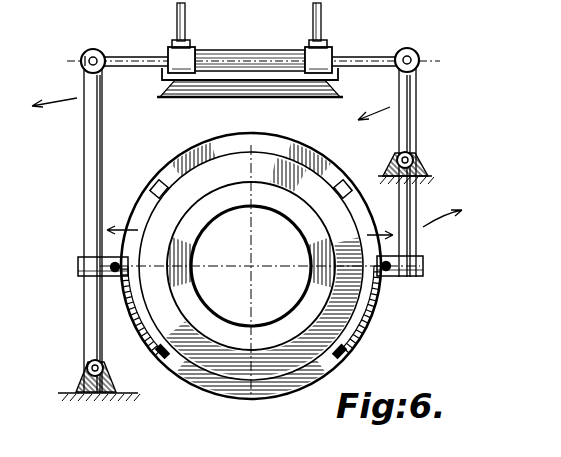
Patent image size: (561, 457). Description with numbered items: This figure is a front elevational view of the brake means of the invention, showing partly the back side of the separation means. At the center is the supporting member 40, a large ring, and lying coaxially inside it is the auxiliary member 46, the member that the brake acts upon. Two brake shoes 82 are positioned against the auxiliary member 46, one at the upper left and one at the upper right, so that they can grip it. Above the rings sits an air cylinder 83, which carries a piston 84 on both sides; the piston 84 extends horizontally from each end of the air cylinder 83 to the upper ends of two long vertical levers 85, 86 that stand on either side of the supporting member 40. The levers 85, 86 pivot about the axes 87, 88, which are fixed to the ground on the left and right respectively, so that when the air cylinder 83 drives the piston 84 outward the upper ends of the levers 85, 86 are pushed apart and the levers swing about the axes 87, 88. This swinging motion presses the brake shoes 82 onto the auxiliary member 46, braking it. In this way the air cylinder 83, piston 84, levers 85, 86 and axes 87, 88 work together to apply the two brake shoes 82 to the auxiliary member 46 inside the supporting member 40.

The supporting member 40 is at (340, 367).
The auxiliary member 46 is at (233, 365).
The brake shoes 82 is at (157, 196).
The air cylinder 83 is at (222, 55).
The piston 84 is at (135, 55).
The lever 85 is at (93, 183).
The lever 86 is at (418, 237).
The axis 87 is at (84, 358).
The axis 88 is at (413, 157).